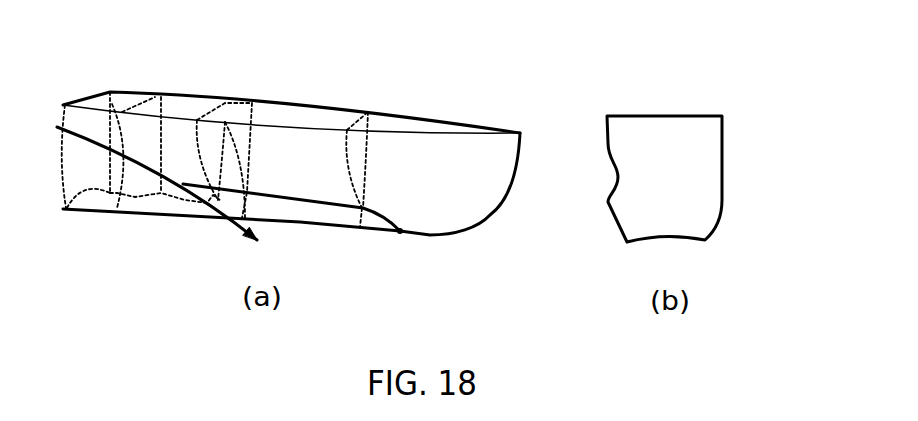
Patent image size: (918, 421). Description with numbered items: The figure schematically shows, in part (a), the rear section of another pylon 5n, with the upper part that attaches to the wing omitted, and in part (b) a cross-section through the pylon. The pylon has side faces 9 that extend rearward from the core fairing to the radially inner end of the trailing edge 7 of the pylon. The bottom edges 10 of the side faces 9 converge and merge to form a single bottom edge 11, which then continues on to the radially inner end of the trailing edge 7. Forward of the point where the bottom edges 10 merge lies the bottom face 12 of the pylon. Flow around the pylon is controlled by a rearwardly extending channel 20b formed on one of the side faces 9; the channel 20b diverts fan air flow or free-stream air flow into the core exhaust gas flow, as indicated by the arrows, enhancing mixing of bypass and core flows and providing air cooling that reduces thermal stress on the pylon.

The pylon 5n is at (428, 92).
The trailing edge of the pylon 7 is at (513, 180).
The side faces 9 is at (465, 143).
The bottom edges 10 is at (197, 220).
The single bottom edge 11 is at (385, 232).
The bottom face 12 is at (150, 206).
The channel 20b is at (90, 120).